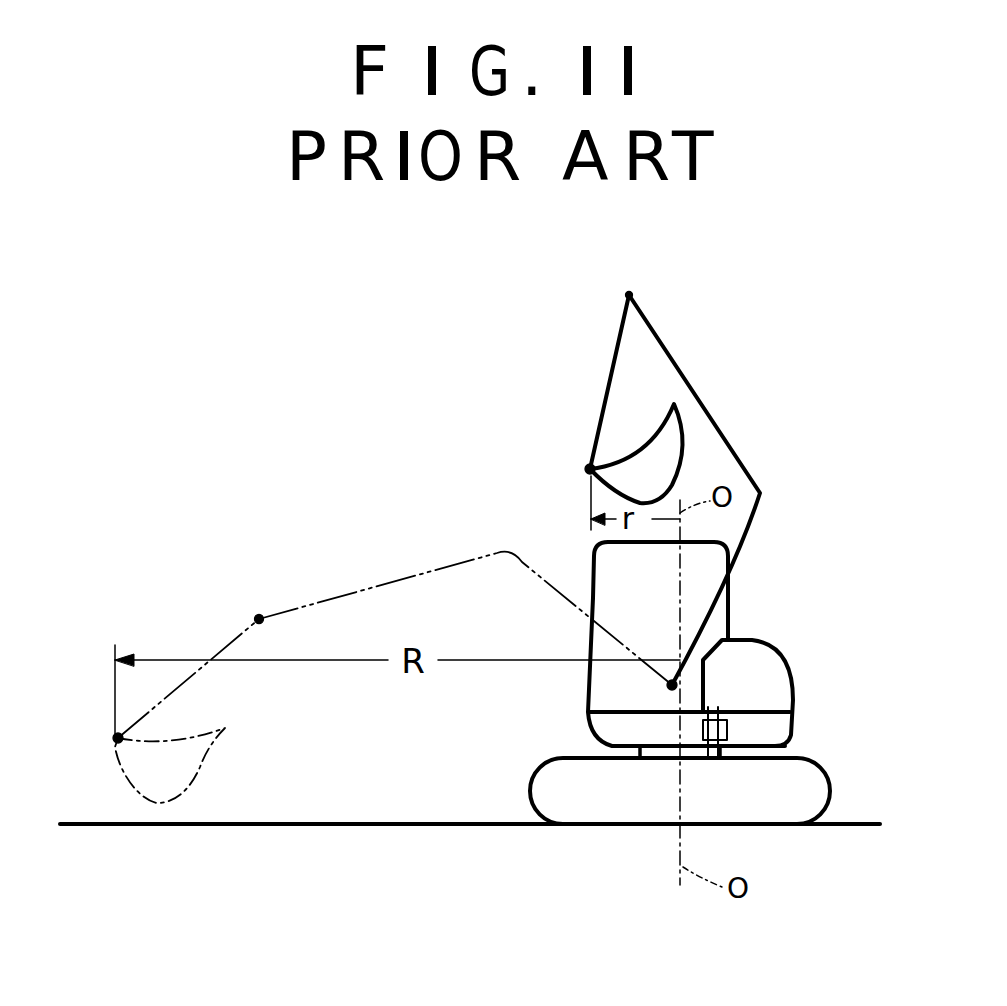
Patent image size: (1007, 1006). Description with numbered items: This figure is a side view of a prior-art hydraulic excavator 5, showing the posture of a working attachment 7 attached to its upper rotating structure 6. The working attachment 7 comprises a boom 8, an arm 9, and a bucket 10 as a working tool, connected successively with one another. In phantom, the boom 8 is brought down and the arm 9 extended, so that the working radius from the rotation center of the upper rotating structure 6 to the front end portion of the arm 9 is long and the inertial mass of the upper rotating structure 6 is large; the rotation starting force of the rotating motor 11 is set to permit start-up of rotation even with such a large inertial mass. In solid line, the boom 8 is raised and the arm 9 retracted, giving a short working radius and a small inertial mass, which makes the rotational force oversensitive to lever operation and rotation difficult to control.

The hydraulic excavator 5 is at (788, 630).
The upper rotating structure 6 is at (782, 680).
The working attachment 7 is at (463, 549).
The boom 8 is at (750, 470).
The arm 9 is at (612, 360).
The bucket 10 is at (640, 440).
The rotating motor 11 is at (727, 727).